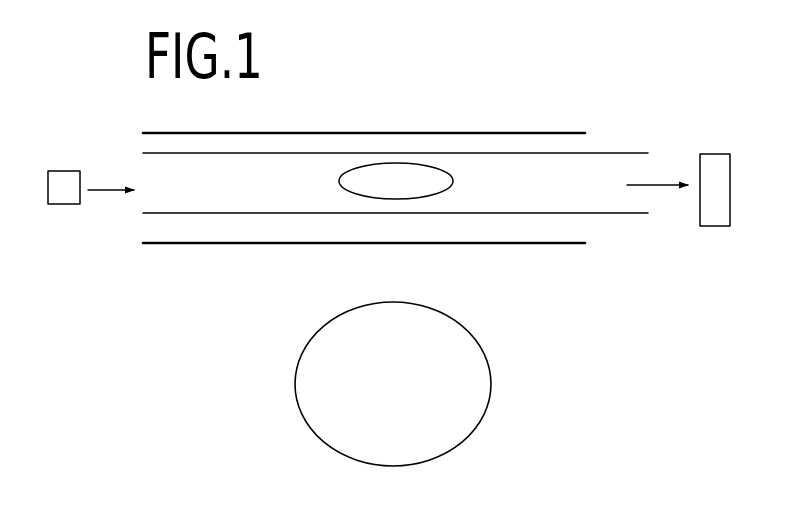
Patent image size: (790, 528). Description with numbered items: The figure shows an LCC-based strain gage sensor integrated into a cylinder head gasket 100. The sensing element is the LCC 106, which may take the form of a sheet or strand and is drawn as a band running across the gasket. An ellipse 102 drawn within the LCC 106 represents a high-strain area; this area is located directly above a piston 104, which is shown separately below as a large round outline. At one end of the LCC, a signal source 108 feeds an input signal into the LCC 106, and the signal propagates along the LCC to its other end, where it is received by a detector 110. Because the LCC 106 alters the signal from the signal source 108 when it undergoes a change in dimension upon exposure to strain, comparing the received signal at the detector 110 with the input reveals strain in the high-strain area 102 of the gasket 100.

The cylinder head gasket 100 is at (549, 131).
The ellipse 102 is at (390, 196).
The piston 104 is at (524, 381).
The LCC 106 is at (249, 150).
The signal source 108 is at (65, 204).
The detector 110 is at (715, 226).